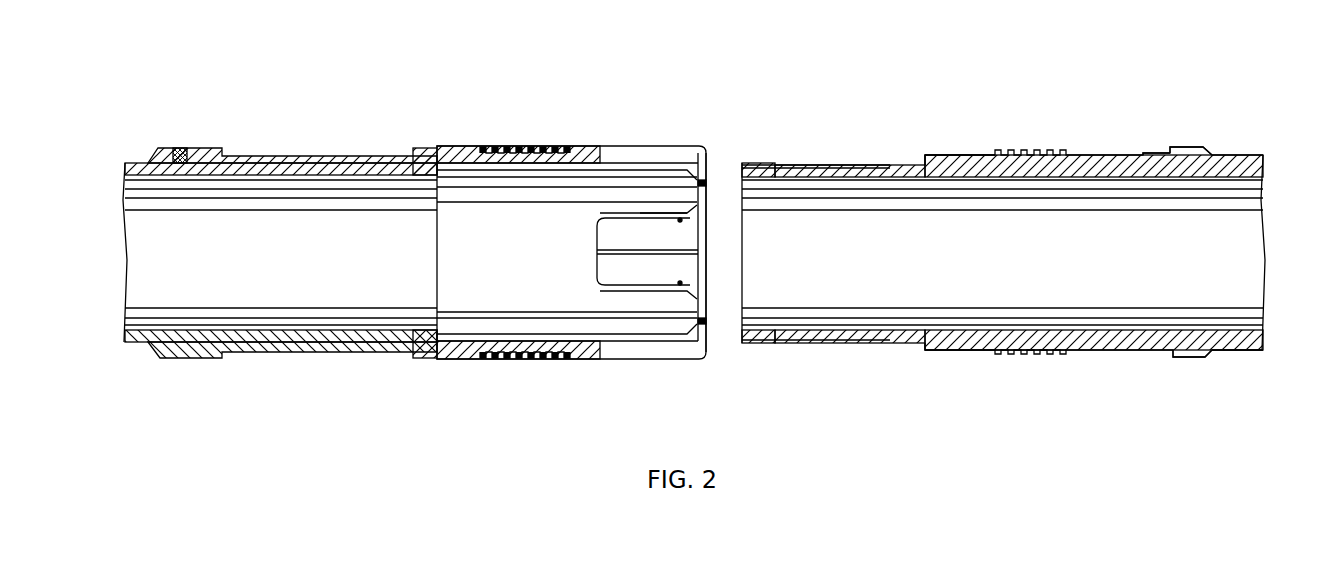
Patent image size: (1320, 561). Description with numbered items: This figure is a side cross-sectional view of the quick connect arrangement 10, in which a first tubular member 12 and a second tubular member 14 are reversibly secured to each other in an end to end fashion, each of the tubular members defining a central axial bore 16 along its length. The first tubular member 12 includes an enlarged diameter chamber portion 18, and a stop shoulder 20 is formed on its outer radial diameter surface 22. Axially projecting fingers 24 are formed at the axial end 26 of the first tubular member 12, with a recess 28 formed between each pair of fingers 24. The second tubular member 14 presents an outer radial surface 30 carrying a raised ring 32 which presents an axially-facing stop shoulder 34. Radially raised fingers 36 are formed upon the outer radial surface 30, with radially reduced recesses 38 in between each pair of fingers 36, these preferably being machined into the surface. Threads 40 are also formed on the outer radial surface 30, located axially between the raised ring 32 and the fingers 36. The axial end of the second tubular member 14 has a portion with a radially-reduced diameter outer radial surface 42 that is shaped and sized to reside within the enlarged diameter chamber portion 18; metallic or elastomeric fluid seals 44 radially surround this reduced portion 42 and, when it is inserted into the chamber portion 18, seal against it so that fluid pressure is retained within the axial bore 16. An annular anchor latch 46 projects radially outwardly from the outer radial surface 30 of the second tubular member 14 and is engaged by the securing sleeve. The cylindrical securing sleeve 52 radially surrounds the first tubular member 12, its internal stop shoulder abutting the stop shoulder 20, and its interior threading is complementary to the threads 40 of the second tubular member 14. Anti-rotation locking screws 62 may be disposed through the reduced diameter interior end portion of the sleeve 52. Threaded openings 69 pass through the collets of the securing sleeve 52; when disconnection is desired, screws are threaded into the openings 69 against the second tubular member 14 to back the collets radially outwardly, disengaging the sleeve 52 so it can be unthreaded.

The quick connect arrangement 10 is at (749, 67).
The first tubular member 12 is at (275, 167).
The second tubular member 14 is at (1216, 128).
The central axial bore 16 is at (1020, 177).
The enlarged diameter chamber portion 18 is at (527, 330).
The stop shoulder 20 is at (398, 352).
The outer radial diameter surface 22 is at (438, 167).
The axially projecting fingers 24 is at (647, 192).
The axial end 26 is at (710, 345).
The recess 28 is at (603, 242).
The outer radial surface 30 is at (1225, 355).
The raised ring 32 is at (1190, 147).
The axially-facing stop shoulder 34 is at (1163, 353).
The radially raised fingers 36 is at (952, 153).
The radially reduced recesses 38 is at (923, 158).
The threads 40 is at (1025, 353).
The radially-reduced diameter outer radial surface 42 is at (775, 340).
The fluid seals 44 is at (847, 162).
The annular anchor latch 46 is at (1142, 153).
The cylindrical securing sleeve 52 is at (357, 137).
The anti-rotation locking screws 62 is at (182, 147).
The threaded openings 69 is at (680, 213).